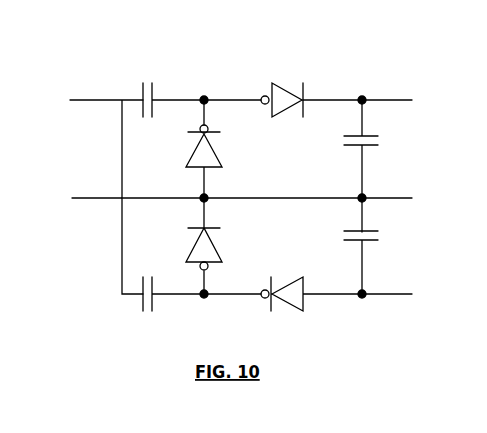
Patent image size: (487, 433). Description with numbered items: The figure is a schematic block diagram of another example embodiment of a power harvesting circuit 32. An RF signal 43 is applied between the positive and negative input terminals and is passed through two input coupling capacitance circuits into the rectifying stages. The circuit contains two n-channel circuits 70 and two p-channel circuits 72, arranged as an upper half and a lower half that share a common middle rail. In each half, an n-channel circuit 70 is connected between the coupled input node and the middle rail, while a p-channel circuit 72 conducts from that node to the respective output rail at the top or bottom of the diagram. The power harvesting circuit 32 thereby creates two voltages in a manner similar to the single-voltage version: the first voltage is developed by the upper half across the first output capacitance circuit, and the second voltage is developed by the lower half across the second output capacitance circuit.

The power harvesting circuit 32 is at (228, 232).
The RF signal 43 is at (76, 193).
The n-channel circuit 70 is at (219, 197).
The p-channel circuit 72 is at (283, 183).